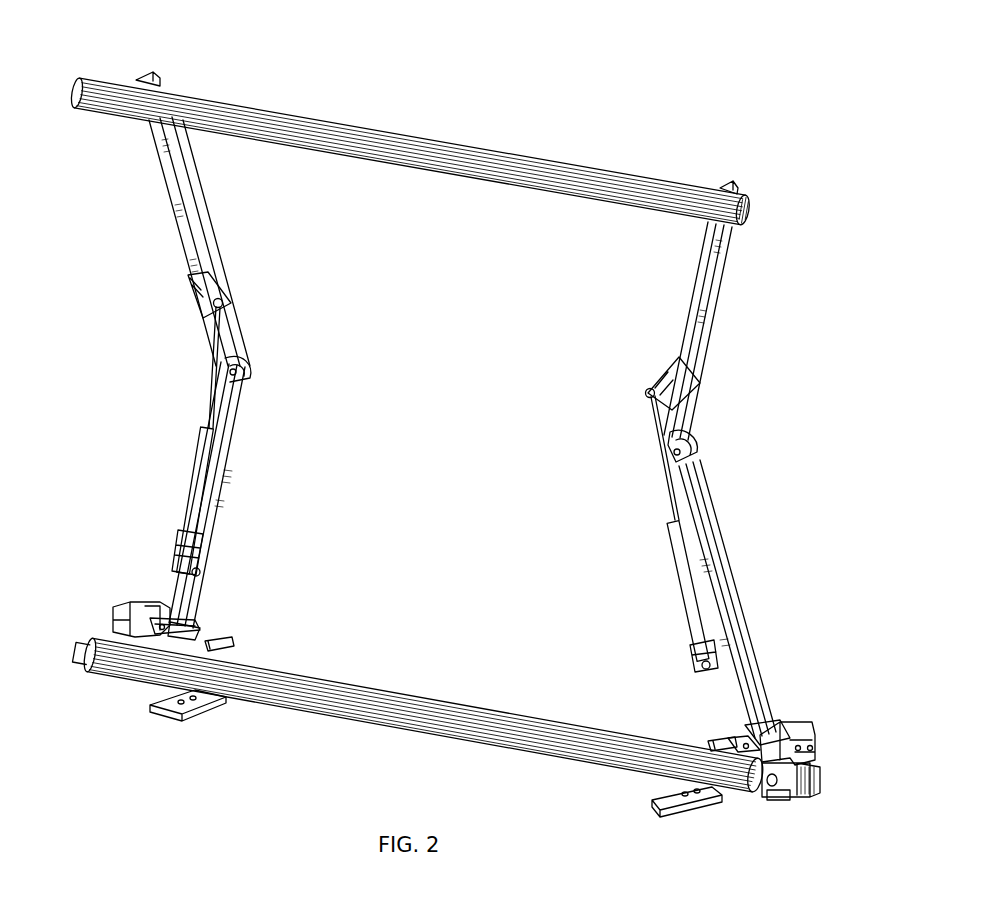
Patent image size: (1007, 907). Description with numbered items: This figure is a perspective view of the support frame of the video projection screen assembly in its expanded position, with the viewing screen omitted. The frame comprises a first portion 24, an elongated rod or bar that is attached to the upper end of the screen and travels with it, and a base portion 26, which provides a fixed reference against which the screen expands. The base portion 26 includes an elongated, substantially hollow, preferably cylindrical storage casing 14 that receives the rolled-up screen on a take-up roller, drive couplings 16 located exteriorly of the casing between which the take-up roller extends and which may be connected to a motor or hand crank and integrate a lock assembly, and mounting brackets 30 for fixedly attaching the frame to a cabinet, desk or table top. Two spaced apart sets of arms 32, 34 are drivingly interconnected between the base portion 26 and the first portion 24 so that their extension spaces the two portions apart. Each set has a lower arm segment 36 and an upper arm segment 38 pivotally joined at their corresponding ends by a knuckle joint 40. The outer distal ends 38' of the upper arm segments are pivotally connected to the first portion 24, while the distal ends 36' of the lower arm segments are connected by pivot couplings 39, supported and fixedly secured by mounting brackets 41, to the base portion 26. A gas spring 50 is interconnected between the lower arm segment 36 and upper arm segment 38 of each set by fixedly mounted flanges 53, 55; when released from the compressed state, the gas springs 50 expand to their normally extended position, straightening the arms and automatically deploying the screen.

The storage casing 14 is at (330, 708).
The drive coupling 16 is at (757, 778).
The first portion 24 is at (470, 148).
The base portion 26 is at (432, 688).
The mounting bracket 30 is at (170, 722).
The set of arms 32 is at (158, 406).
The set of arms 34 is at (787, 367).
The lower arm segment 36 is at (491, 550).
The distal end of lower arm segment 36' is at (510, 660).
The upper arm segment 38 is at (484, 278).
The outer distal end of upper arm segment 38' is at (464, 98).
The pivot coupling 39 is at (195, 628).
The knuckle joint 40 is at (250, 368).
The mounting bracket 41 is at (130, 608).
The gas spring 50 is at (196, 450).
The flange 53 is at (200, 280).
The flange 55 is at (185, 555).